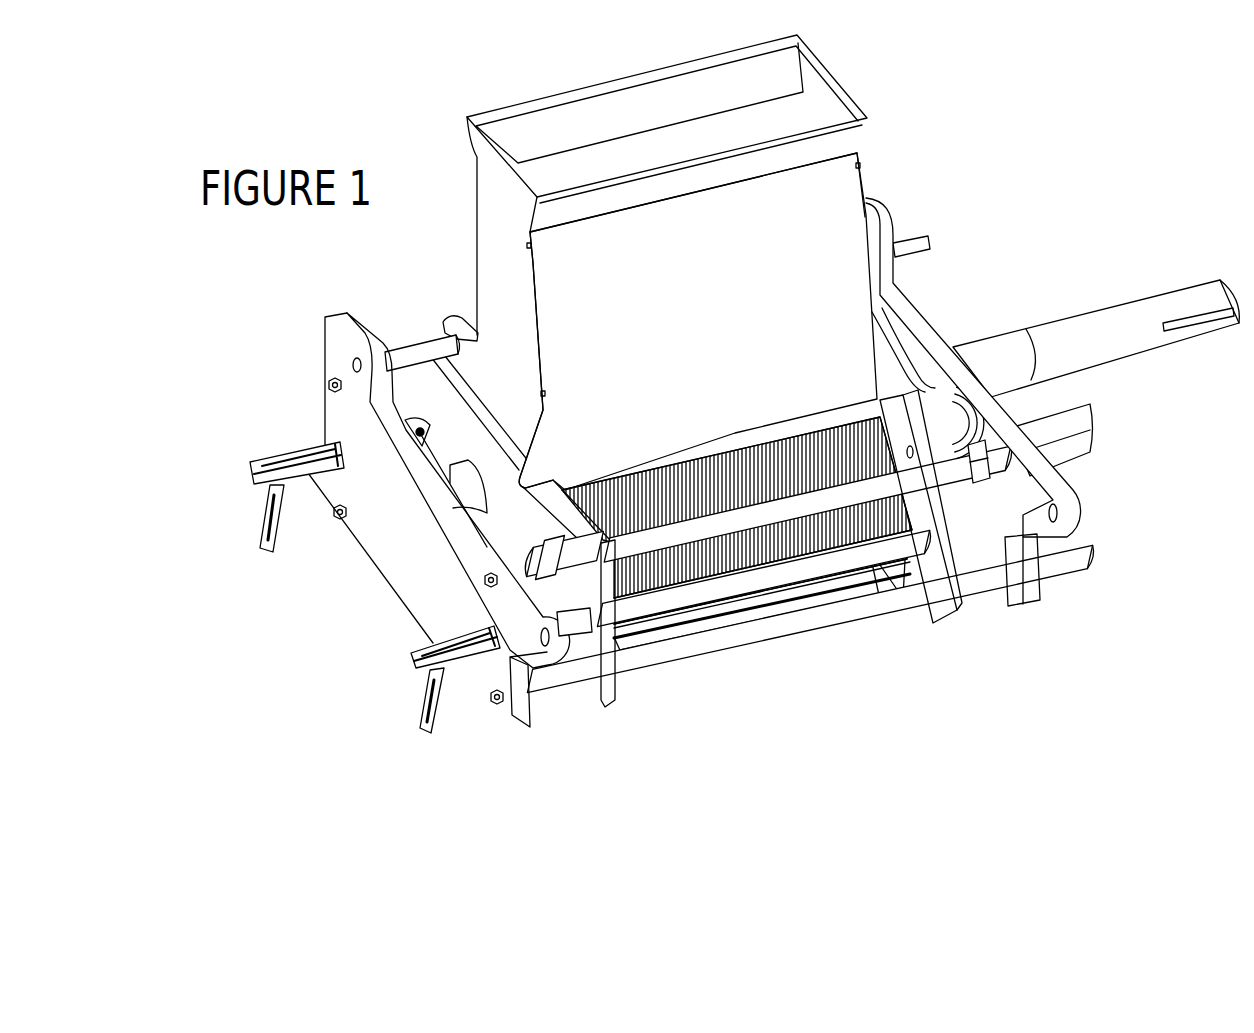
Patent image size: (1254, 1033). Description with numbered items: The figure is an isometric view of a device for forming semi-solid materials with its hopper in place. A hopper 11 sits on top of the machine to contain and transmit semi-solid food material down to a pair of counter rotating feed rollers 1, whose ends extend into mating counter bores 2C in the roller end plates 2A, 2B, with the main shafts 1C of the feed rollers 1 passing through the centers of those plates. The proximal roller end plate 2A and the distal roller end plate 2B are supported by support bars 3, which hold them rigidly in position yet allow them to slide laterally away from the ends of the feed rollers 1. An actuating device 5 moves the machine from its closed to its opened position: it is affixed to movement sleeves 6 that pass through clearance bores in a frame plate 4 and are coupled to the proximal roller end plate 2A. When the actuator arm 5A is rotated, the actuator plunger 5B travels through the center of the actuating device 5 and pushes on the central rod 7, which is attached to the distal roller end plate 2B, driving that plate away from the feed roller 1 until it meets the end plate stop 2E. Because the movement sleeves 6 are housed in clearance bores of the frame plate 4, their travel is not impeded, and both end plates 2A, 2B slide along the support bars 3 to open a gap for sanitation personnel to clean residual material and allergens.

The feed rollers 1 is at (655, 577).
The main shafts 1C is at (1012, 357).
The proximal roller end plate 2A is at (623, 657).
The distal roller end plate 2B is at (957, 533).
The counter bores 2C is at (980, 467).
The end plate stop 2E is at (607, 635).
The support bars 3 is at (817, 500).
The frame plate 4 is at (518, 690).
The actuating device 5 is at (347, 640).
The actuator arm 5A is at (425, 722).
The actuator plunger 5B is at (290, 473).
The movement sleeves 6 is at (555, 572).
The central rod 7 is at (945, 558).
The hopper 11 is at (793, 257).